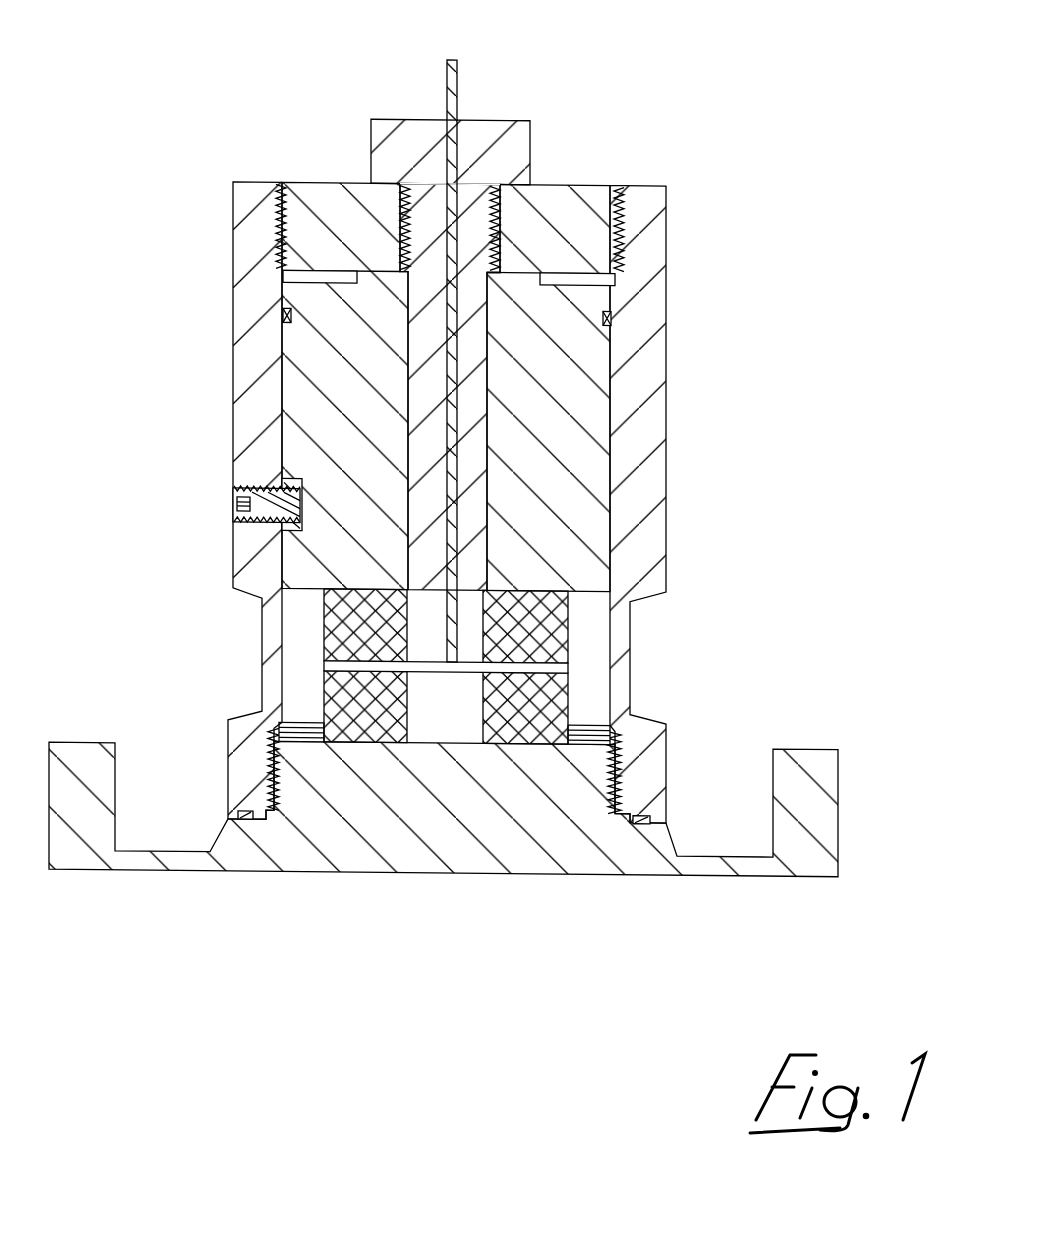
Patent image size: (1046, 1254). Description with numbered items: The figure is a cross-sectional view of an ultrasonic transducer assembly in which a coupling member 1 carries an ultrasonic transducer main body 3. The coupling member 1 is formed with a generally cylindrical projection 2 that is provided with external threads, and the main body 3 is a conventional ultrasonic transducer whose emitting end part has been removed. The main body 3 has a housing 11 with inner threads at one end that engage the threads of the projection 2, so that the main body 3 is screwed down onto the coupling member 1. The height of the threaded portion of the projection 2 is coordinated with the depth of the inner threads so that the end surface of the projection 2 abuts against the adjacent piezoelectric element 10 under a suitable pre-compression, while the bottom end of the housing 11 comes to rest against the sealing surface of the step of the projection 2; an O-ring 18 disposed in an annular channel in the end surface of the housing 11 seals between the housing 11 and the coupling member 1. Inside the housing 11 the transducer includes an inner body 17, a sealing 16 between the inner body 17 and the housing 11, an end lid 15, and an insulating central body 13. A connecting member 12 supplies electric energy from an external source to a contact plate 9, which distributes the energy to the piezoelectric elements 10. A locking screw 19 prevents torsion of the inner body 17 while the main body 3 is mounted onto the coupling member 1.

The coupling member 1 is at (443, 516).
The projection 2 is at (568, 792).
The ultrasonic transducer main body 3 is at (497, 424).
The contact plate 9 is at (568, 670).
The piezoelectric elements 10 is at (330, 639).
The housing 11 is at (658, 568).
The connecting member 12 is at (459, 66).
The insulating central body 13 is at (532, 133).
The end lid 15 is at (598, 185).
The sealing 16 is at (612, 318).
The inner body 17 is at (605, 375).
The O-ring 18 is at (650, 814).
The locking screw 19 is at (233, 514).